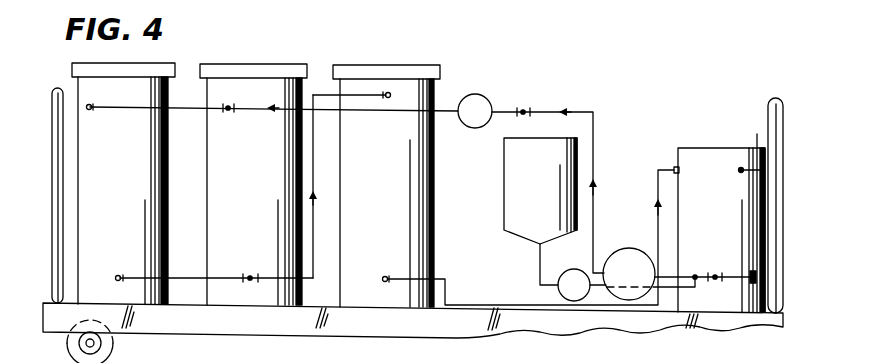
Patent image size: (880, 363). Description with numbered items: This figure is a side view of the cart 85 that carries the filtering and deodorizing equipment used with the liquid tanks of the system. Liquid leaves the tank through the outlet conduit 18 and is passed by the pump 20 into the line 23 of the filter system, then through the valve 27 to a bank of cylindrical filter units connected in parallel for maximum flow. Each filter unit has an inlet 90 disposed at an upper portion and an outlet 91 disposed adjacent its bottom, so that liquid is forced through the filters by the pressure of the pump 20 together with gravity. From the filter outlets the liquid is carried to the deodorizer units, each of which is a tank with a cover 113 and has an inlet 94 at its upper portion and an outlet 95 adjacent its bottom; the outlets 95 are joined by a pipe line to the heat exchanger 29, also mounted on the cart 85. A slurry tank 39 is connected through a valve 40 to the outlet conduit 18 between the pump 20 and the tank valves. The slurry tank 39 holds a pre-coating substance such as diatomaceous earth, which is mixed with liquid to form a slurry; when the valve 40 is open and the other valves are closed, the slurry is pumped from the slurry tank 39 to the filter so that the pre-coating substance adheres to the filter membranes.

The outlet conduit 18 is at (737, 270).
The pump 20 is at (629, 248).
The line 23 is at (190, 109).
The valve 27 is at (481, 95).
The heat exchanger 29 is at (687, 148).
The slurry tank 39 is at (546, 196).
The valve 40 is at (557, 291).
The cart 85 is at (456, 340).
The inlet 90 is at (228, 113).
The outlet 91 is at (252, 275).
The inlet 94 is at (392, 93).
The outlet 95 is at (388, 275).
The cover 113 is at (690, 361).